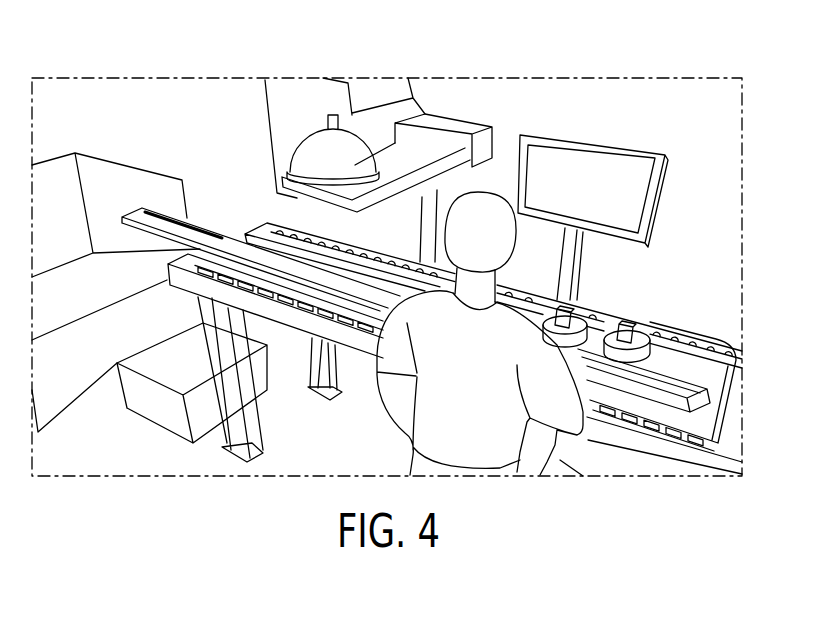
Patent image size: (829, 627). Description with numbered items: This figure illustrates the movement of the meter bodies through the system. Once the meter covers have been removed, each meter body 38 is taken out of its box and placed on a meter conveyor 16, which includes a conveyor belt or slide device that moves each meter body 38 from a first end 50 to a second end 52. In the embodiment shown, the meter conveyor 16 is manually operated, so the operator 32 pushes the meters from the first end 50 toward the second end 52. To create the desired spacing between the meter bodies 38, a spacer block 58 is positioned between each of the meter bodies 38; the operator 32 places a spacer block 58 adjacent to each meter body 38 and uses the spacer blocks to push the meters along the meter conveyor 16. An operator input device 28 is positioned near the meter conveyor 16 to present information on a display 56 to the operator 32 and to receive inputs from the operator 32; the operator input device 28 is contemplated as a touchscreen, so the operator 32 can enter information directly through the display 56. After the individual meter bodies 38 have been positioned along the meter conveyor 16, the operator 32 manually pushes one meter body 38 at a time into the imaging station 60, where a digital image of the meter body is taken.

The meter conveyor 16 is at (692, 378).
The operator input device 28 is at (593, 143).
The operator 32 is at (420, 432).
The meter body 38 is at (633, 328).
The first end 50 is at (712, 336).
The second end 52 is at (147, 213).
The display 56 is at (630, 193).
The spacer block 58 is at (592, 340).
The imaging station 60 is at (457, 116).